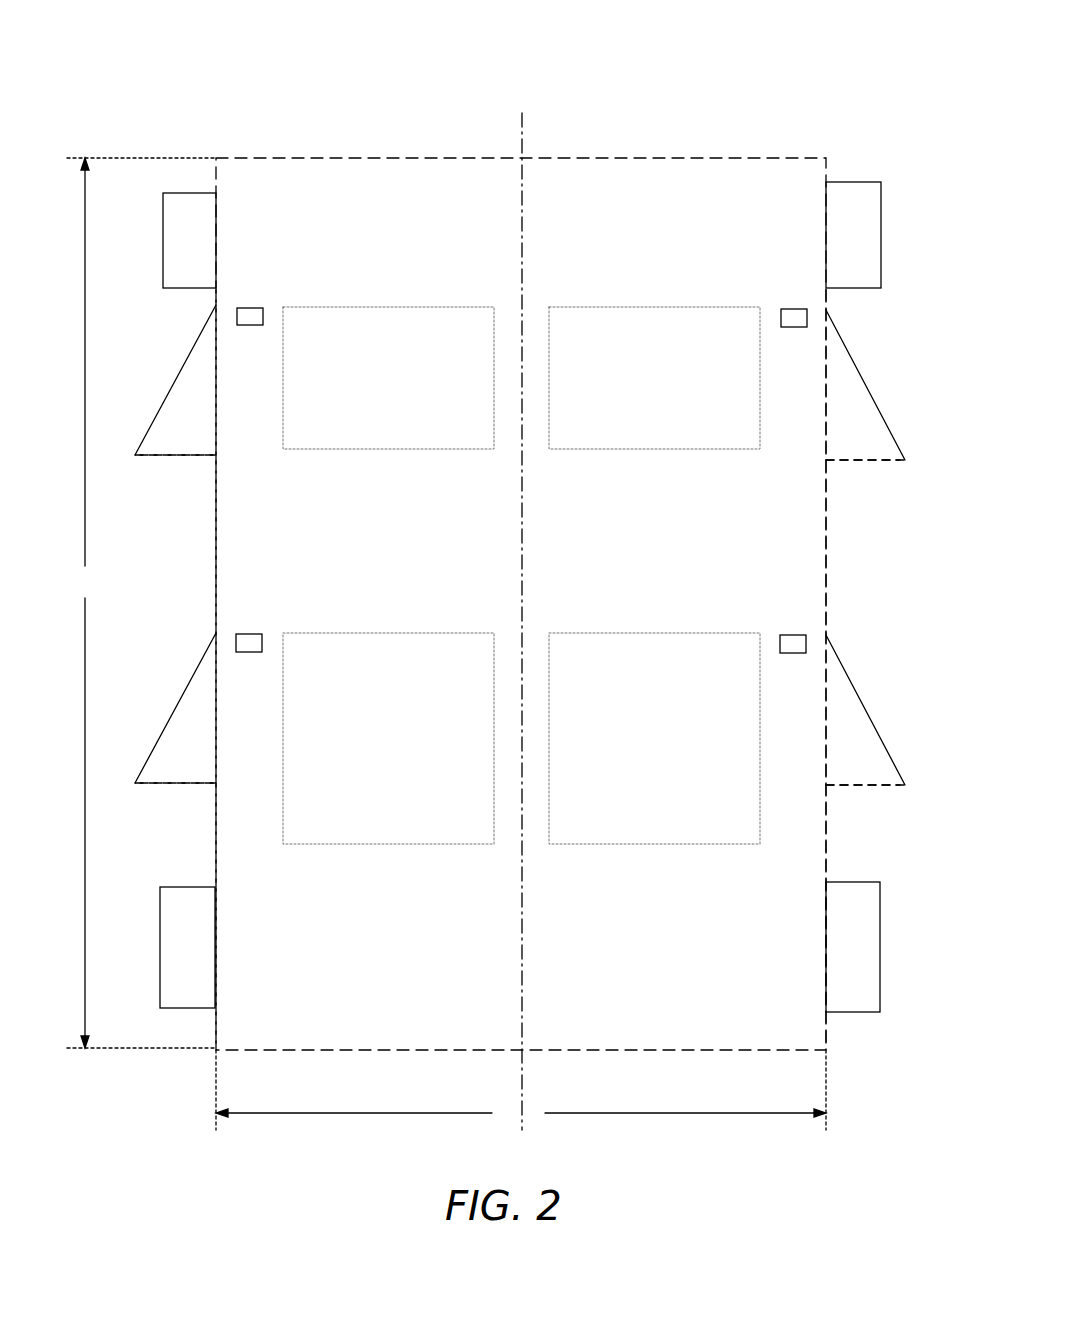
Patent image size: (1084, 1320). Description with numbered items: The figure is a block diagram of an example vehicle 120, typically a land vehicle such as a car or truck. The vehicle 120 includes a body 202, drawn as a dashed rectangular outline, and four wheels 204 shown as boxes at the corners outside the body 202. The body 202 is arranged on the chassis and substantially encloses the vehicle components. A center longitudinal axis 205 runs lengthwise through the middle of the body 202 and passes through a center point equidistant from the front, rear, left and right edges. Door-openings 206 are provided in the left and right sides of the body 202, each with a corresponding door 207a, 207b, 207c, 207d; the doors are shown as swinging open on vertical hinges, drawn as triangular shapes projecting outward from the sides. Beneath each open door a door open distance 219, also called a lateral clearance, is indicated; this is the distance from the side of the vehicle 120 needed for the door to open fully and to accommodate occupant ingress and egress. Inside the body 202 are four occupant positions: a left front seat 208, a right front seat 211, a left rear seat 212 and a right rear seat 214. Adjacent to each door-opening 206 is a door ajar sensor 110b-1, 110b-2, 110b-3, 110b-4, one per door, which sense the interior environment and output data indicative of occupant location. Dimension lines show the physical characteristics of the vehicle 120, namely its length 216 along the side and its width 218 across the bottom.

The vehicle 120 is at (790, 95).
The body 202 is at (826, 850).
The wheels 204 is at (520, 597).
The center longitudinal axis 205 is at (524, 130).
The door-openings 206 is at (218, 396).
The door 207a is at (187, 362).
The door 207b is at (857, 365).
The door 207c is at (187, 690).
The door 207d is at (855, 690).
The left front seat 208 is at (388, 378).
The right front seat 211 is at (654, 378).
The left rear seat 212 is at (388, 738).
The right rear seat 214 is at (654, 738).
The length 216 is at (140, 603).
The width 218 is at (521, 1090).
The door open distances 219 is at (177, 459).
The door ajar sensor 110b-1 is at (256, 306).
The door ajar sensor 110b-2 is at (790, 308).
The door ajar sensor 110b-3 is at (256, 632).
The door ajar sensor 110b-4 is at (790, 633).